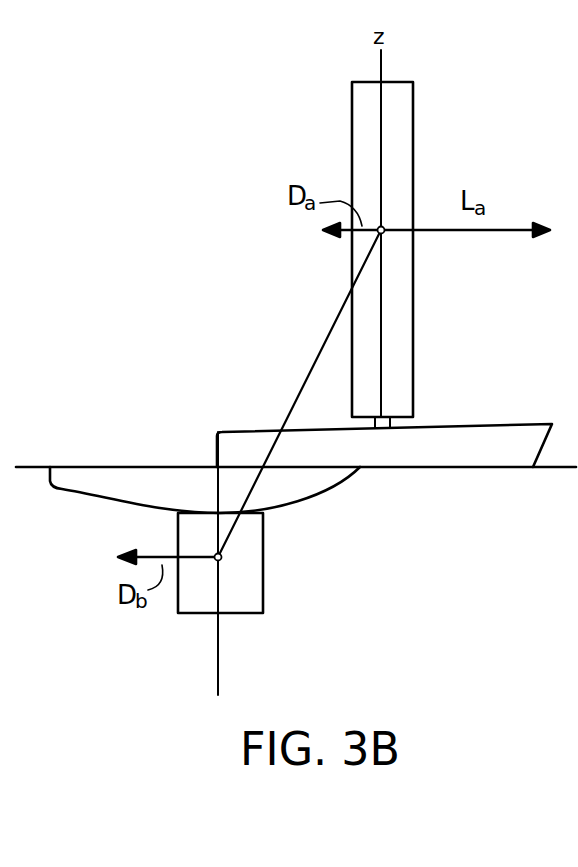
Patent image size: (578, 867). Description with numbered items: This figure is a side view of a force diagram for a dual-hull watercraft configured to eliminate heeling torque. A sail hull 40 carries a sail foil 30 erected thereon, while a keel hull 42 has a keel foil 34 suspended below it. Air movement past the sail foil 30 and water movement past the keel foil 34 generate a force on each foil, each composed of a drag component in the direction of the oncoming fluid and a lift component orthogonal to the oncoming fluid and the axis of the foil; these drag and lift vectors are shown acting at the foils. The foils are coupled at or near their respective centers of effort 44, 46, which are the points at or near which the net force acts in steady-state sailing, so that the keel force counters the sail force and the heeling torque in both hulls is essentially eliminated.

The sail foil 30 is at (402, 277).
The keel foil 34 is at (263, 596).
The sail hull 40 is at (485, 436).
The keel hull 42 is at (117, 473).
The center of effort 44 is at (381, 230).
The center of effort 46 is at (222, 558).